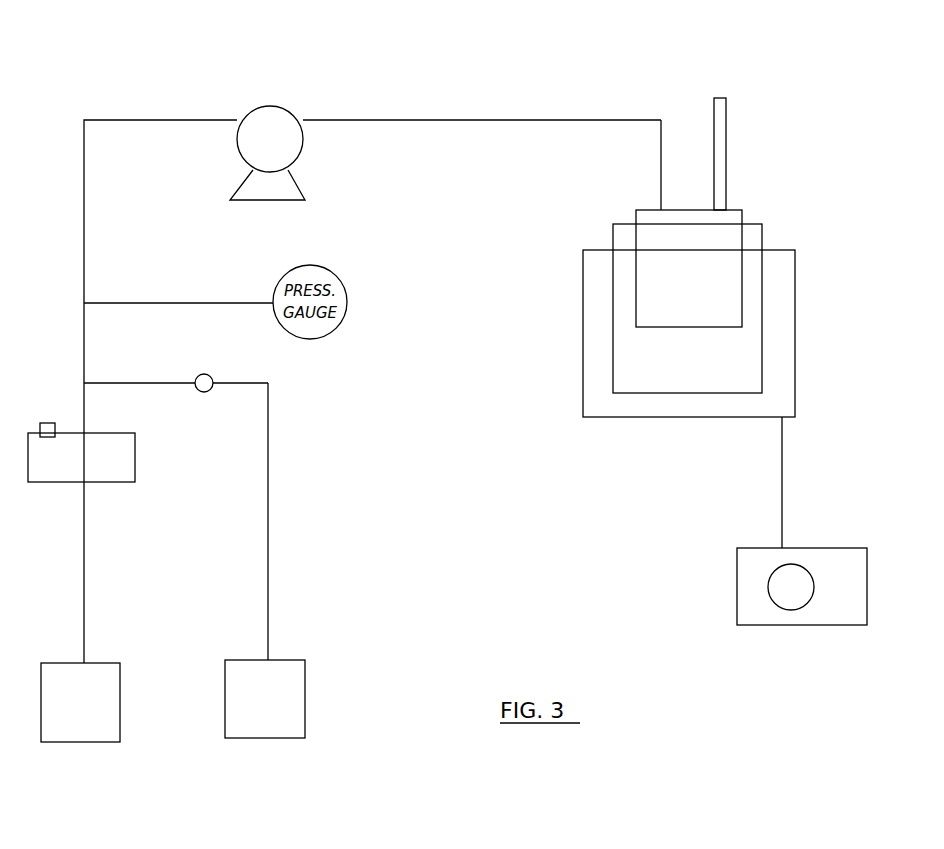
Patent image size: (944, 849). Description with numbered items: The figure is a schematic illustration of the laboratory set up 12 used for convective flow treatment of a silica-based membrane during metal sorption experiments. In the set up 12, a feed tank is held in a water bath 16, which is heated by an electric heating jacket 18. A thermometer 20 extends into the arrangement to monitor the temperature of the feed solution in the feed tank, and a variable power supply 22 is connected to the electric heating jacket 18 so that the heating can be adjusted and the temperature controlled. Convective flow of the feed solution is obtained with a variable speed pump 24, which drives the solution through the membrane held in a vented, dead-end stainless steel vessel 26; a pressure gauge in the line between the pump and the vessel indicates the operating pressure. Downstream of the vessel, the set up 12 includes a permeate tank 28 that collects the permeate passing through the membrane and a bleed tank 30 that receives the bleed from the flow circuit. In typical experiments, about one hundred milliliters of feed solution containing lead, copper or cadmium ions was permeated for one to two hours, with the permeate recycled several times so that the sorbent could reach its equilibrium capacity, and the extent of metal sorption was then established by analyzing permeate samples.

The set up 12 is at (812, 98).
The water bath 16 is at (737, 217).
The electric heating jacket 18 is at (790, 293).
The thermometer 20 is at (718, 152).
The variable power supply 22 is at (832, 552).
The variable speed pump 24 is at (280, 120).
The vented, dead-end stainless steel vessel 26 is at (128, 457).
The permeate tank 28 is at (110, 677).
The bleed tank 30 is at (298, 682).